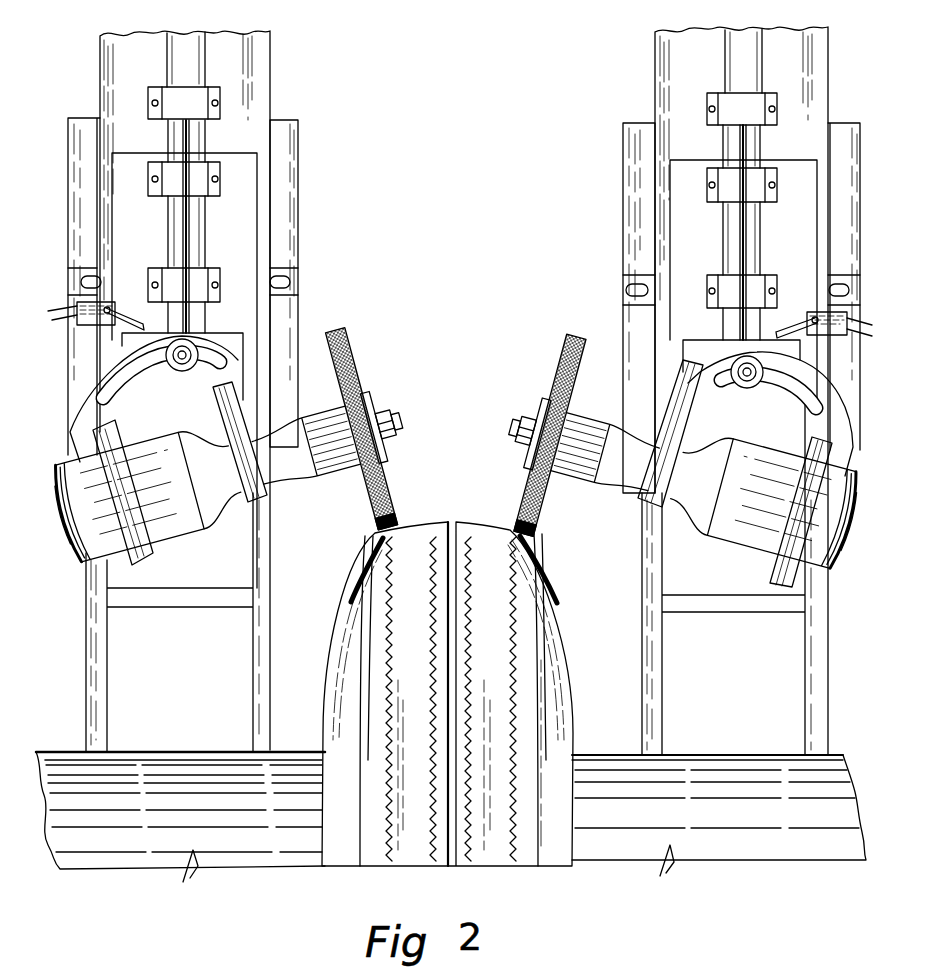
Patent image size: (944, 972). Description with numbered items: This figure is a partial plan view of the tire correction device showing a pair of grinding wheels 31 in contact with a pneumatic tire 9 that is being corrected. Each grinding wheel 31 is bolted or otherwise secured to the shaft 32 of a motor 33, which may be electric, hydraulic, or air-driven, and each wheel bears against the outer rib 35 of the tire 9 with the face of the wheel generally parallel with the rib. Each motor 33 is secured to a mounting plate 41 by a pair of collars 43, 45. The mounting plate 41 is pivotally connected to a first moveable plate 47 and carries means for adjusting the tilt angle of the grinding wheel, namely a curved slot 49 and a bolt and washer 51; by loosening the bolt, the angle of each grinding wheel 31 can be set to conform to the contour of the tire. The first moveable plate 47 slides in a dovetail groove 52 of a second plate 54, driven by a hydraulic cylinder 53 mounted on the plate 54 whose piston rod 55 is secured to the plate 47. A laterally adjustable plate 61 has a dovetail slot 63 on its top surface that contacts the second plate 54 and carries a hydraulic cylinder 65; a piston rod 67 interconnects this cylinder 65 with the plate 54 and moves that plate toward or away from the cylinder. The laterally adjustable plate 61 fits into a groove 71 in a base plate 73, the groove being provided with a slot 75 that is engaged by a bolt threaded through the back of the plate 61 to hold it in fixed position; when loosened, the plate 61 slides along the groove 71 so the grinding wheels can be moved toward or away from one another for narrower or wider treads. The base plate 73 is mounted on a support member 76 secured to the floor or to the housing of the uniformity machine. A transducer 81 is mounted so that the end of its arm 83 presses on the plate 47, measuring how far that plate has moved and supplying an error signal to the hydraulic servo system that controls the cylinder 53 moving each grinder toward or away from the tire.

The pneumatic tire 9 is at (572, 668).
The grinding wheel 31 is at (351, 346).
The shaft 32 is at (399, 419).
The motor 33 is at (90, 534).
The outer rib 35 is at (385, 594).
The mounting plate 41 is at (468, 467).
The collar 43 is at (113, 443).
The collar 45 is at (250, 489).
The first moveable plate 47 is at (236, 352).
The curved slot 49 is at (143, 372).
The bolt and washer 51 is at (184, 364).
The dovetail groove 52 is at (206, 324).
The hydraulic cylinder 53 is at (207, 231).
The second plate 54 is at (464, 370).
The piston rod 55 is at (173, 317).
The laterally adjustable plate 61 is at (262, 76).
The dovetail slot 63 is at (201, 144).
The hydraulic cylinder 65 is at (186, 44).
The piston rod 67 is at (179, 134).
The groove 71 is at (297, 288).
The base plate 73 is at (287, 180).
The slot 75 is at (290, 279).
The support member 76 is at (97, 661).
The transducer 81 is at (90, 317).
The arm 83 is at (118, 322).